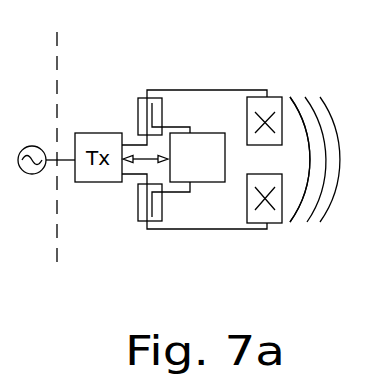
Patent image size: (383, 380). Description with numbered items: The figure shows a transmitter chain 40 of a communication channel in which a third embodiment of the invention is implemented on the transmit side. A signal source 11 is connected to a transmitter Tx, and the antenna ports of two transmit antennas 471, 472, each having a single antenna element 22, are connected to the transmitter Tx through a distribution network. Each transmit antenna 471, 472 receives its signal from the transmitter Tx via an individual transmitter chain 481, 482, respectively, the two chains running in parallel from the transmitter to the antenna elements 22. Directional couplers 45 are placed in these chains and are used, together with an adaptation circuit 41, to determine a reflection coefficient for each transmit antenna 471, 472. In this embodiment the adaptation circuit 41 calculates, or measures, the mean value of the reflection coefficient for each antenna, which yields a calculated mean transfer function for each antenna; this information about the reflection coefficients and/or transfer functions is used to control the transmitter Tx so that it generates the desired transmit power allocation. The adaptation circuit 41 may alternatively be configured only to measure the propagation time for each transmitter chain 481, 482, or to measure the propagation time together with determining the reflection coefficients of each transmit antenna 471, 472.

The signal source 11 is at (27, 175).
The transmitter chain 40 is at (194, 94).
The adaptation circuit 41 is at (197, 157).
The directional couplers 45 is at (138, 108).
The individual transmitter chain 481 is at (167, 89).
The individual transmitter chain 482 is at (172, 232).
The antenna element 22 is at (265, 122).
The transmit antenna 471 is at (280, 97).
The transmit antenna 472 is at (282, 222).